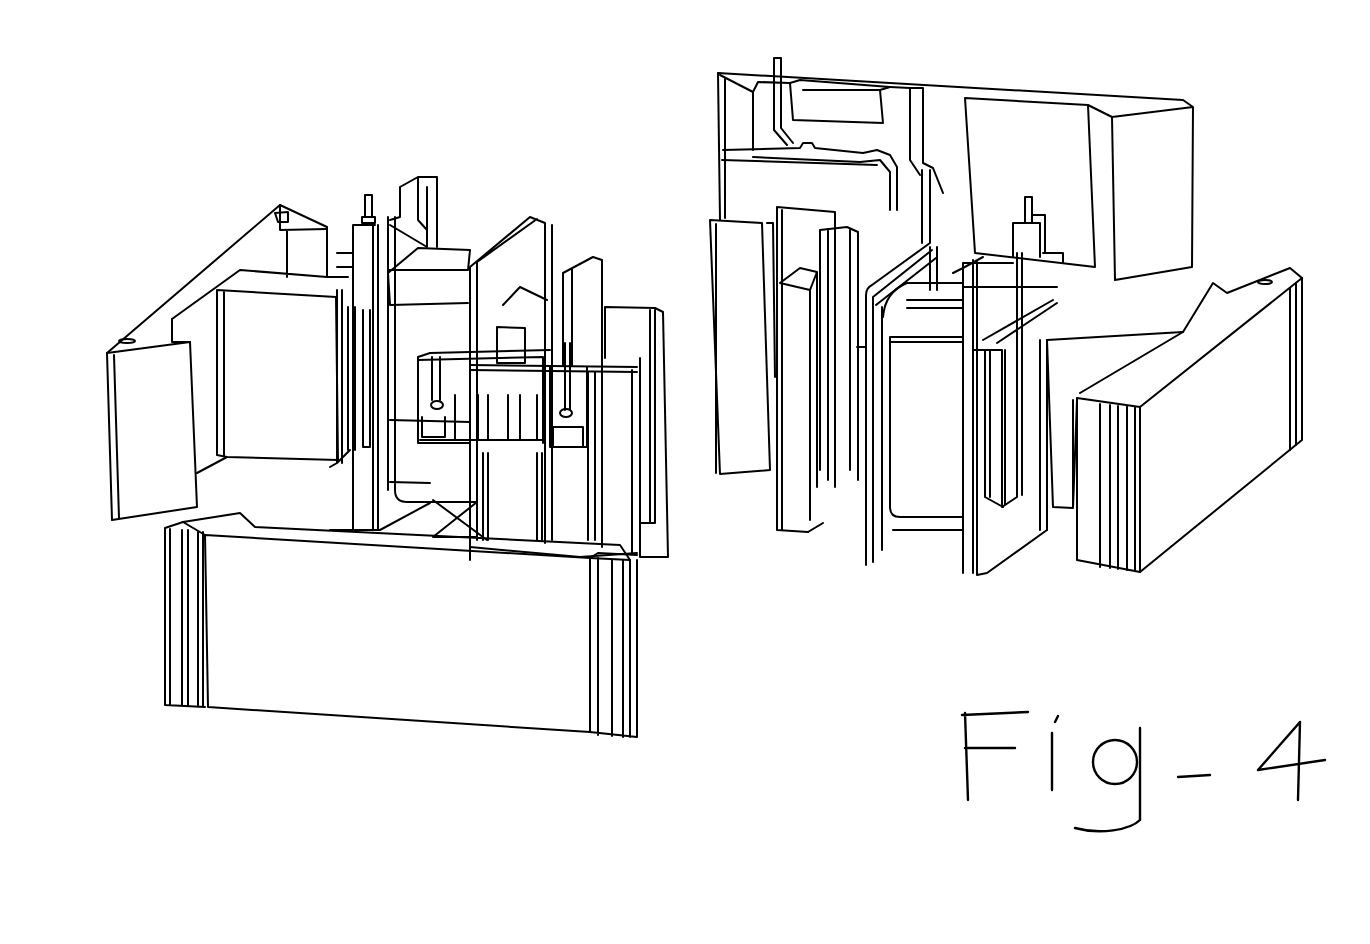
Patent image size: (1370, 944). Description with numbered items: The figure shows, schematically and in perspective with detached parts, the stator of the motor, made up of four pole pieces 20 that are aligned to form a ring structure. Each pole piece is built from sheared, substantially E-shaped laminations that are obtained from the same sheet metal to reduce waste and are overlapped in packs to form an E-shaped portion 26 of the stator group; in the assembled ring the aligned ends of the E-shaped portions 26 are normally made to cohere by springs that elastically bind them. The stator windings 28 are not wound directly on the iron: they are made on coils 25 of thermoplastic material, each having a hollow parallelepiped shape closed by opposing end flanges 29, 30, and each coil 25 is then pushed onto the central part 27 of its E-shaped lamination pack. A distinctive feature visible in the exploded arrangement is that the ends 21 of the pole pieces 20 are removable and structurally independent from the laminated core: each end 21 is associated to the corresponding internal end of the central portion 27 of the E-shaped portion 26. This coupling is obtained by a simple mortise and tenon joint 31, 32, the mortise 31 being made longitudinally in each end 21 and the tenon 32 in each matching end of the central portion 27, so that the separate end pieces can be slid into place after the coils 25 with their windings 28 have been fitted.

The pole piece 20 is at (714, 212).
The end of pole piece 21 is at (563, 273).
The coil 25 is at (970, 590).
The E-shaped portion 26 is at (218, 270).
The central part 27 is at (302, 392).
The stator winding 28 is at (455, 257).
The end flange 29 is at (757, 187).
The end flange 30 is at (1007, 535).
The mortise 31 is at (347, 433).
The tenon 32 is at (832, 465).